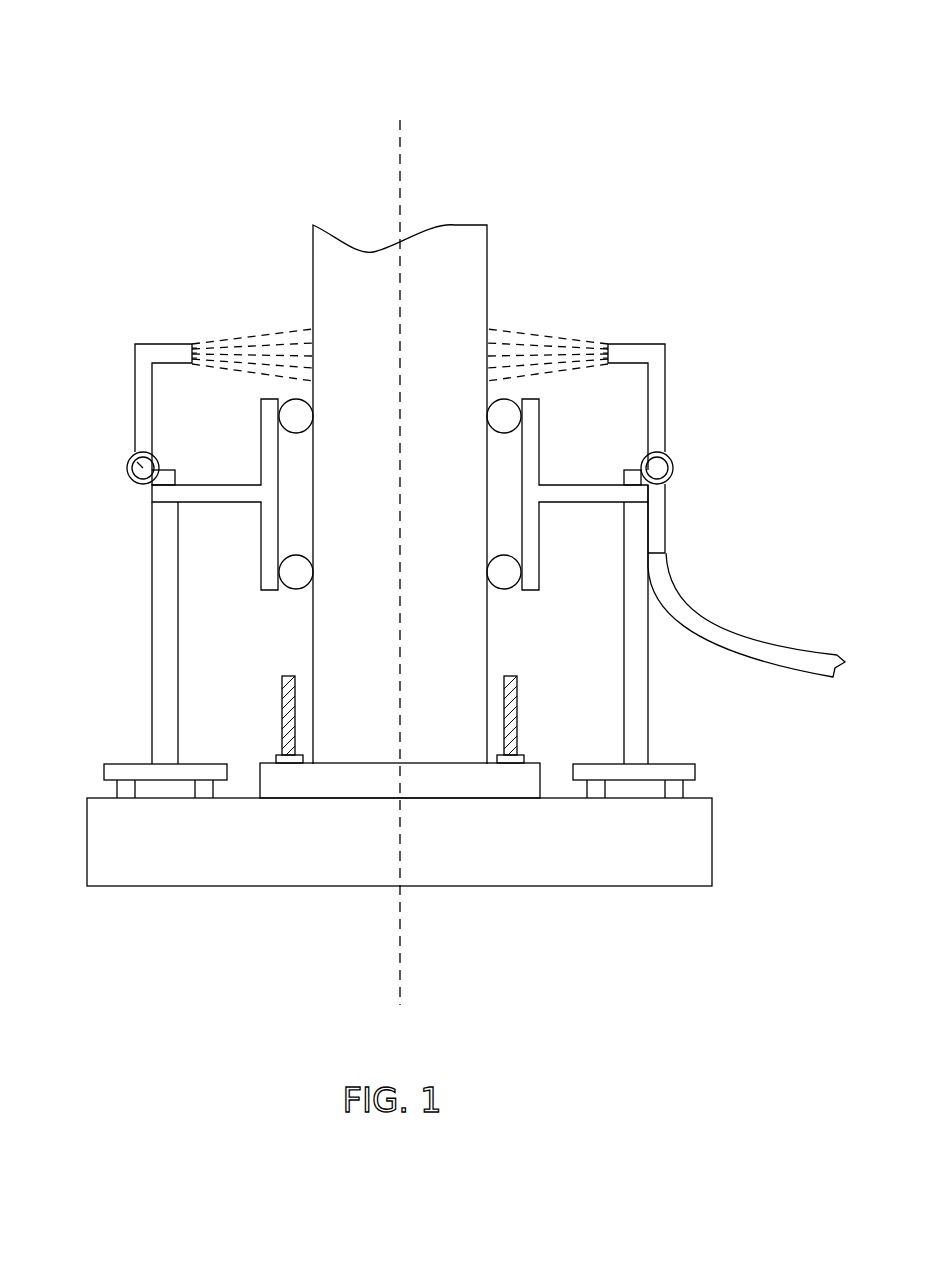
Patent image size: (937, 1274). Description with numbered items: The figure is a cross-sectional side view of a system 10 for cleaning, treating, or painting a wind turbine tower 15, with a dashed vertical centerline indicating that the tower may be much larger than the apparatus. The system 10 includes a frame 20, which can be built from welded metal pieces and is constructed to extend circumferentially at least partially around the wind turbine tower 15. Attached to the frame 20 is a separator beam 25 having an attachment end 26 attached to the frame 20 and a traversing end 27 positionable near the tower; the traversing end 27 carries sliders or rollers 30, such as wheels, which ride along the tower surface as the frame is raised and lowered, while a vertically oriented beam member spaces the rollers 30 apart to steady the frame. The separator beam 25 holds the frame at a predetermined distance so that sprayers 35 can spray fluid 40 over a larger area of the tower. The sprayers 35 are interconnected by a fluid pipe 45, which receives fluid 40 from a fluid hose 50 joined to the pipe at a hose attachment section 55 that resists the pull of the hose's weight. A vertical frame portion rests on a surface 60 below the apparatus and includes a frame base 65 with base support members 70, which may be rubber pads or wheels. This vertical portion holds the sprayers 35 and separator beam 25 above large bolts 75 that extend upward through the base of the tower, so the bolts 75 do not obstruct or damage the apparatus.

The system 10 is at (226, 122).
The wind turbine tower 15 is at (455, 226).
The frame 20 is at (140, 495).
The separator beam 25 is at (595, 498).
The attachment end 26 is at (614, 472).
The traversing end 27 is at (252, 471).
The sliders or rollers 30 is at (296, 589).
The sprayers 35 is at (135, 345).
The fluid 40 is at (276, 330).
The fluid pipe 45 is at (128, 462).
The fluid hose 50 is at (683, 597).
The hose attachment section 55 is at (672, 528).
The surface 60 is at (712, 847).
The frame base 65 is at (104, 765).
The base support members 70 is at (695, 778).
The bolts 75 is at (517, 683).